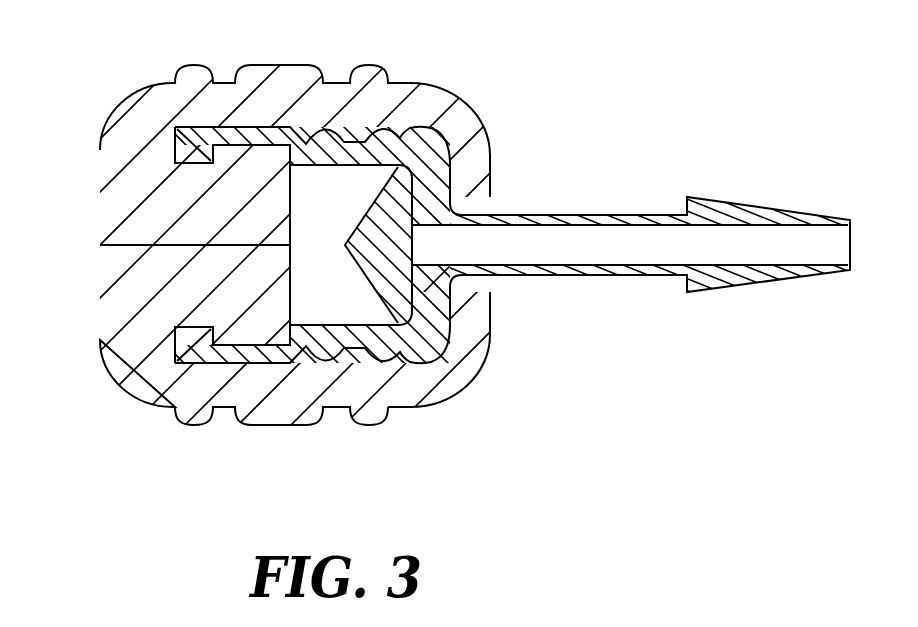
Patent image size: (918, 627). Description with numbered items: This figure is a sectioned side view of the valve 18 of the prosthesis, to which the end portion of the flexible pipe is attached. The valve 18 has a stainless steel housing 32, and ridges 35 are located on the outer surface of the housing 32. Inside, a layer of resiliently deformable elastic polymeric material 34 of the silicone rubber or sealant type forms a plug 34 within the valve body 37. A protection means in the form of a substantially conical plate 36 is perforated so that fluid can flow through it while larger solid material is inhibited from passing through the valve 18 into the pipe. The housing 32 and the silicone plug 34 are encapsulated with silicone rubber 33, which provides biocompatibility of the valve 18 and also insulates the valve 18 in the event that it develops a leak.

The valve 18 is at (459, 258).
The housing 32 is at (420, 133).
The silicone rubber 33 is at (473, 364).
The resiliently deformable elastic polymeric material 34 is at (263, 168).
The ridges 35 is at (190, 426).
The conical plate 36 is at (380, 247).
The valve body 37 is at (322, 302).